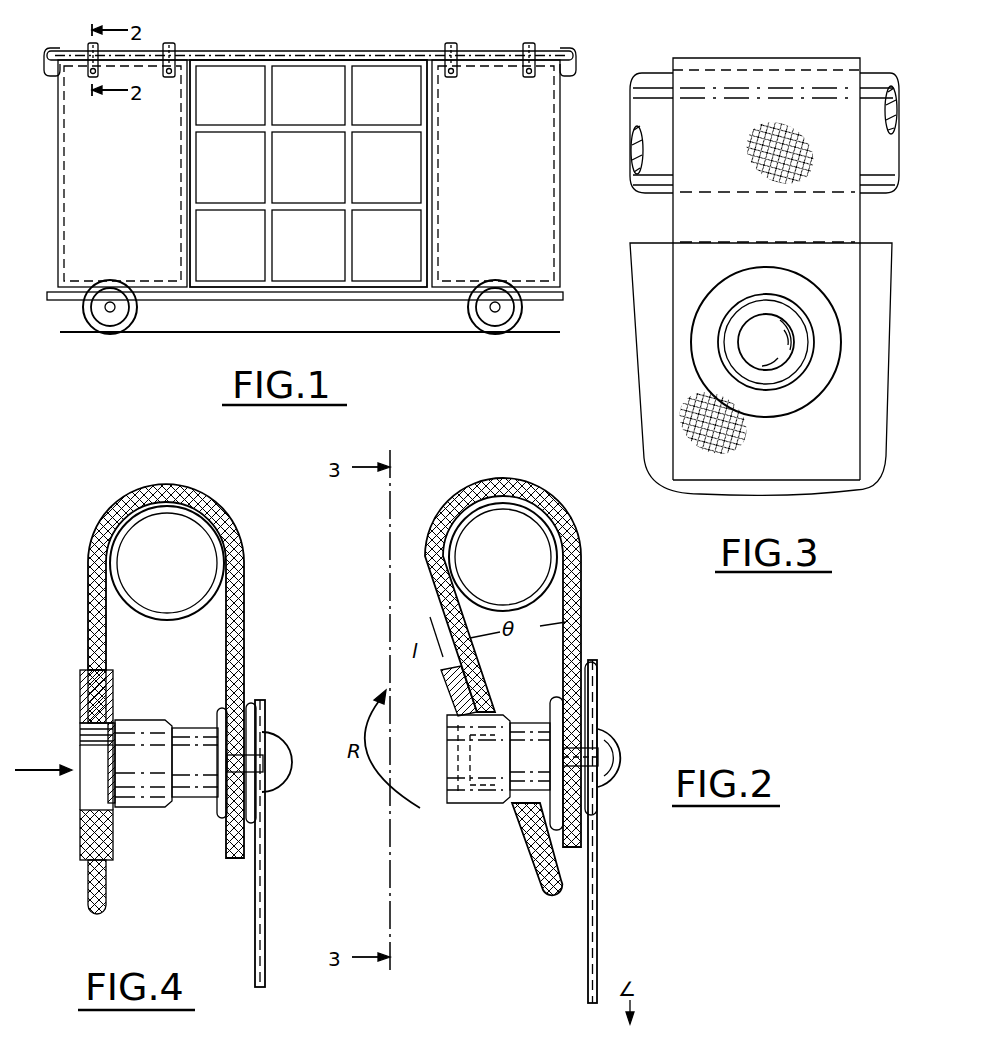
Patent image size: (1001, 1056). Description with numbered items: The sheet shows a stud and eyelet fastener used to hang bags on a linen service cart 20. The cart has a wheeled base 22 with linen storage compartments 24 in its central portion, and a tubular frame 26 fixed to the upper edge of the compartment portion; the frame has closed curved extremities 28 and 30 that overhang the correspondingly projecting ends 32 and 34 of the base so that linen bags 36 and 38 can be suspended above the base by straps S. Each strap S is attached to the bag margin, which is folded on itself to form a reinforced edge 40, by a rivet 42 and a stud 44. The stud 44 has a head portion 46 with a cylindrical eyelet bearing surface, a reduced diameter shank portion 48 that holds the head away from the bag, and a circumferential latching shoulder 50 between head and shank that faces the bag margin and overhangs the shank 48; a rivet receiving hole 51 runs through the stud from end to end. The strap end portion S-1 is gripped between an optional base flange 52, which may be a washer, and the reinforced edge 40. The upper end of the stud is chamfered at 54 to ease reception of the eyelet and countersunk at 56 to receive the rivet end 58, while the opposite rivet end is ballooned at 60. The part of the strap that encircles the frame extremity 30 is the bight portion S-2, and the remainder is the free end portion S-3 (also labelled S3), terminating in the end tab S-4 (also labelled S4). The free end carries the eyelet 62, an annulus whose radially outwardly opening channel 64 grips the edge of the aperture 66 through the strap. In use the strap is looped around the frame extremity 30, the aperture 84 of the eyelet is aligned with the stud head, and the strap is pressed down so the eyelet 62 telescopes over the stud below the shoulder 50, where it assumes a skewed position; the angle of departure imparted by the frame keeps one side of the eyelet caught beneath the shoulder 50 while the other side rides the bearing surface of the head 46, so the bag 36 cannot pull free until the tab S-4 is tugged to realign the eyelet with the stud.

In FIG. 1, the linen service cart 20 is at (323, 185).
In FIG. 1, the wheeled base 22 is at (232, 302).
In FIG. 1, the linen storage compartments 24 is at (400, 102).
In FIG. 1, the tubular frame 26 is at (320, 52).
In FIG. 1, the closed curved extremity 28 is at (492, 53).
In FIG. 1, the closed curved extremity 30 is at (163, 50).
In FIG. 3, the closed curved extremity 30 is at (648, 82).
In FIG. 2, the closed curved extremity 30 is at (531, 506).
In FIG. 1, the projecting end of the base 32 is at (548, 300).
In FIG. 1, the projecting end of the base 34 is at (75, 298).
In FIG. 1, the linen bag 36 is at (136, 209).
In FIG. 3, the linen bag 36 is at (650, 380).
In FIG. 4, the linen bag 36 is at (265, 883).
In FIG. 2, the linen bag 36 is at (597, 930).
In FIG. 1, the linen bag 38 is at (513, 175).
In FIG. 2, the reinforced edge 40 is at (600, 694).
In FIG. 2, the rivet 42 is at (597, 756).
In FIG. 2, the stud 44 is at (482, 814).
In FIG. 4, the head portion 46 is at (155, 806).
In FIG. 2, the head portion 46 is at (466, 805).
In FIG. 4, the shank portion 48 is at (197, 798).
In FIG. 2, the shank portion 48 is at (535, 700).
In FIG. 4, the latching shoulder 50 is at (165, 722).
In FIG. 2, the latching shoulder 50 is at (521, 724).
In FIG. 2, the rivet receiving hole 51 is at (520, 842).
In FIG. 2, the base flange 52 is at (556, 672).
In FIG. 3, the chamfer 54 is at (722, 342).
In FIG. 2, the chamfer 54 is at (447, 720).
In FIG. 2, the countersink 56 is at (445, 748).
In FIG. 3, the rivet end 58 is at (758, 355).
In FIG. 2, the rivet end 58 is at (447, 775).
In FIG. 2, the ballooned rivet end 60 is at (622, 770).
In FIG. 3, the eyelet 62 is at (777, 402).
In FIG. 4, the eyelet 62 is at (74, 700).
In FIG. 2, the eyelet 62 is at (536, 848).
In FIG. 4, the channel 64 is at (90, 835).
In FIG. 4, the aperture 66 is at (82, 808).
In FIG. 4, the eyelet aperture 84 is at (82, 735).
In FIG. 1, the strap S is at (88, 50).
In FIG. 2, the strap S is at (577, 567).
In FIG. 2, the strap end portion S-1 is at (583, 629).
In FIG. 2, the bight portion S-2 is at (540, 492).
In FIG. 2, the free end portion S-3 is at (456, 664).
In FIG. 2, the end tab S-4 is at (533, 868).
In FIG. 3, the free end portion S3 is at (766, 269).
In FIG. 4, the free end portion S3 is at (88, 600).
In FIG. 4, the end tab S4 is at (82, 885).